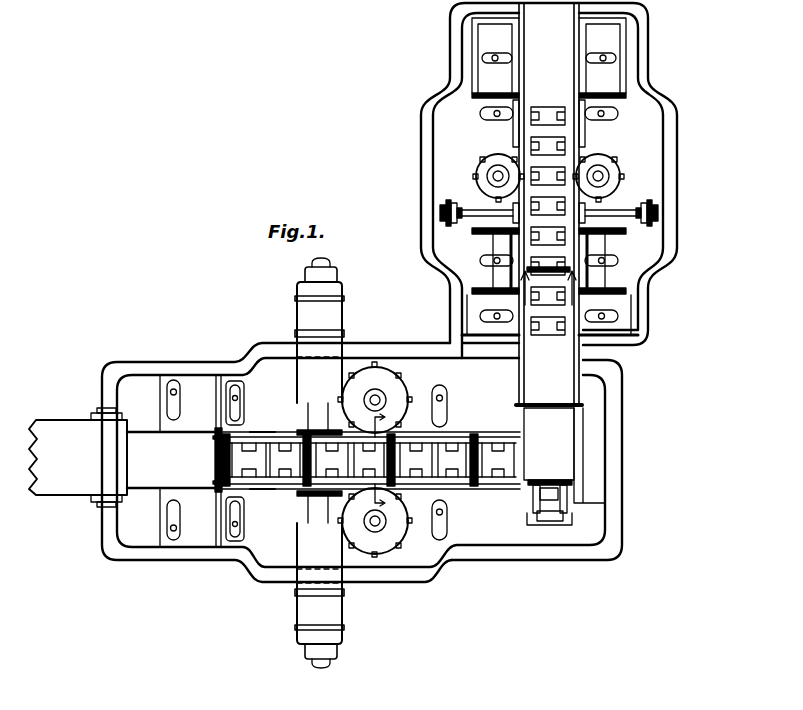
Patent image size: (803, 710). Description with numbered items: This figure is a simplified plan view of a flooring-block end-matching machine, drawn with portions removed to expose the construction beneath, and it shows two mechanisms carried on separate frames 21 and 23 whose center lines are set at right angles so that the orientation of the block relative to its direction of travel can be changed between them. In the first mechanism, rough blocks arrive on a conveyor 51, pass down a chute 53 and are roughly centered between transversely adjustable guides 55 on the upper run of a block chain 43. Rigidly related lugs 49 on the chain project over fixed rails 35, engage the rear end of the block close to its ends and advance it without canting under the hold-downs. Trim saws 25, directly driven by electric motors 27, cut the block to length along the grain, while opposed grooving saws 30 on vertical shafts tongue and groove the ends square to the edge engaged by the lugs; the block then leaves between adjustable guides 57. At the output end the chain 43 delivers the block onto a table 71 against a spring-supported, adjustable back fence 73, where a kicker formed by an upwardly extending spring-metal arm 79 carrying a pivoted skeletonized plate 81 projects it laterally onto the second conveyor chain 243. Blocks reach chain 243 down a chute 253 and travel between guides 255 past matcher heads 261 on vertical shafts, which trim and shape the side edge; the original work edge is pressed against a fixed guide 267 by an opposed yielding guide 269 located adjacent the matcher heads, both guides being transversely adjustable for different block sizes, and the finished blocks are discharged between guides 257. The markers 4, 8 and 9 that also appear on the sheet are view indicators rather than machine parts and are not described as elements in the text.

The frame 21 is at (163, 364).
The frame 23 is at (432, 236).
The chute 253 is at (600, 354).
The guides 257 is at (488, 40).
The conveyor chain 243 is at (526, 165).
The matcher heads 261 is at (486, 161).
The fixed guide 267 is at (490, 212).
The yielding guide 269 is at (598, 212).
The guides 255 is at (500, 272).
The section line 9 is at (548, 299).
The table 71 is at (563, 421).
The back fence 73 is at (580, 452).
The arm 79 is at (545, 526).
The skeletonized plate 81 is at (563, 516).
The conveyor 51 is at (53, 429).
The lugs 49 is at (214, 458).
The chute 53 is at (197, 431).
The pin 8 is at (216, 437).
The block chain 43 is at (496, 442).
The adjustable guides 57 is at (464, 437).
The grooving saws 30 is at (381, 370).
The section line 4 is at (389, 463).
The electric motors 27 is at (302, 319).
The trim saws 25 is at (296, 431).
The fixed rails 35 is at (285, 431).
The guides 55 is at (262, 431).